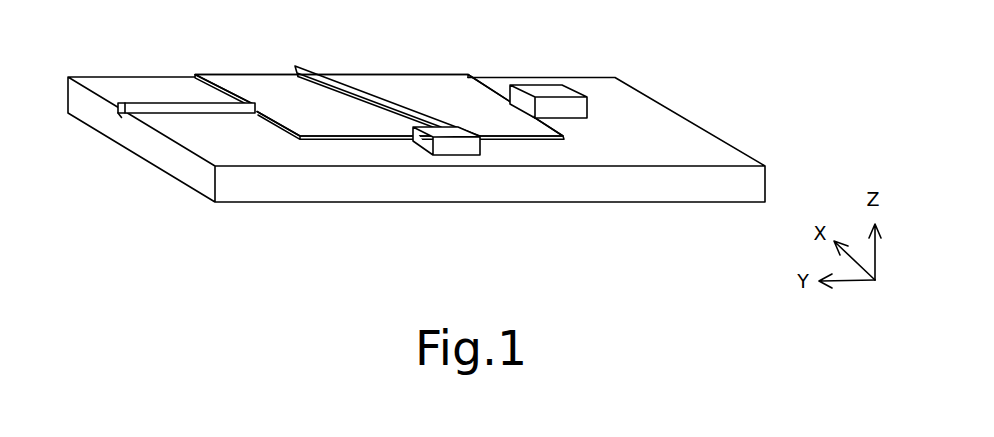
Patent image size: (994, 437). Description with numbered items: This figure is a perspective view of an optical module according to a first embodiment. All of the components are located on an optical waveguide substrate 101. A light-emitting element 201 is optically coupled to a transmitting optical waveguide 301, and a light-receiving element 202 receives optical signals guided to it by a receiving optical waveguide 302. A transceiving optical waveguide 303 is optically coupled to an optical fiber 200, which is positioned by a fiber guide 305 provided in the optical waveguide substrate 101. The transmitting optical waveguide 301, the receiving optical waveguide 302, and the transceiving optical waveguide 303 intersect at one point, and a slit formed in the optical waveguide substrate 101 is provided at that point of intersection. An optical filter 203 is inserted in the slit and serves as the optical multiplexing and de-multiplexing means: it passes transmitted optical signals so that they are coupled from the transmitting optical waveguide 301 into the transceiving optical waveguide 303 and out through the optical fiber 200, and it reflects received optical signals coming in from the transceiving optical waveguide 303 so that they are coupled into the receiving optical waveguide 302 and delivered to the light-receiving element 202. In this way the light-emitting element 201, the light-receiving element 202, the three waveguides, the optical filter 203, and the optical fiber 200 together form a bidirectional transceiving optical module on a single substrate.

The optical waveguide substrate 101 is at (558, 203).
The optical fiber 200 is at (175, 103).
The light-emitting element 201 is at (552, 84).
The light-receiving element 202 is at (456, 148).
The optical filter 203 is at (377, 94).
The transmitting optical waveguide 301 is at (455, 105).
The receiving optical waveguide 302 is at (398, 114).
The transceiving optical waveguide 303 is at (300, 105).
The fiber guide 305 is at (122, 118).